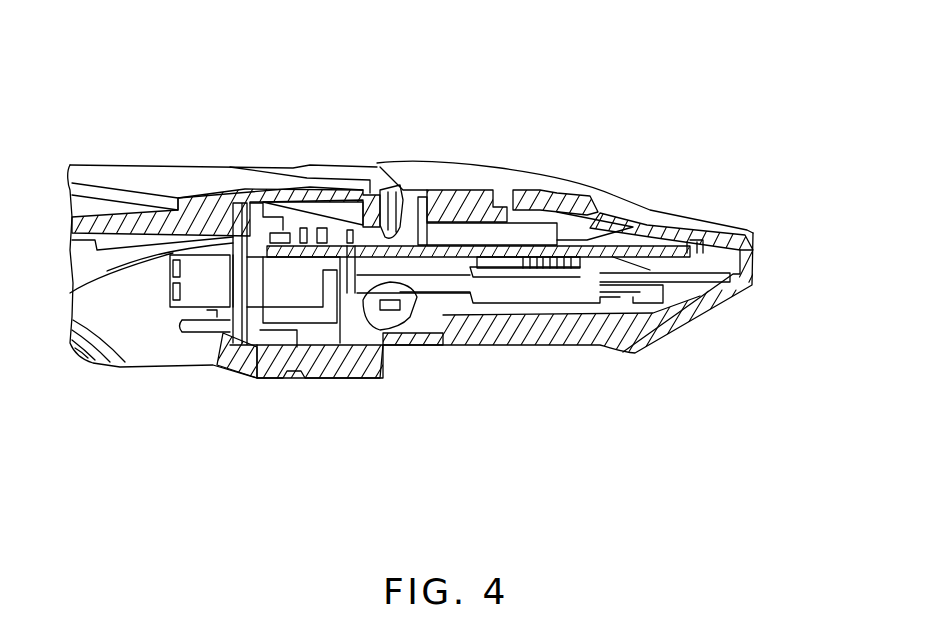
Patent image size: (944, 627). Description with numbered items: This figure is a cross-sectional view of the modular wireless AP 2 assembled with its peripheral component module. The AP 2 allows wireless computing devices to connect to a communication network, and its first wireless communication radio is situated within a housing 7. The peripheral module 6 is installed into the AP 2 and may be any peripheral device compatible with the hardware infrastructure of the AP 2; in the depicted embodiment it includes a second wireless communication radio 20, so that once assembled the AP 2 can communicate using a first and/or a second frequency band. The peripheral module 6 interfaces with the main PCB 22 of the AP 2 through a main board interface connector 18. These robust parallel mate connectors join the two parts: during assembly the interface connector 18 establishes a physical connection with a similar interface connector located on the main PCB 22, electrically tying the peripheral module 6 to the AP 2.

The modular wireless AP 2 is at (601, 139).
The housing 7 is at (290, 164).
The peripheral module 6 is at (650, 325).
The main PCB 22 is at (590, 232).
The second wireless communication radio 20 is at (433, 283).
The main board interface connector 18 is at (715, 270).